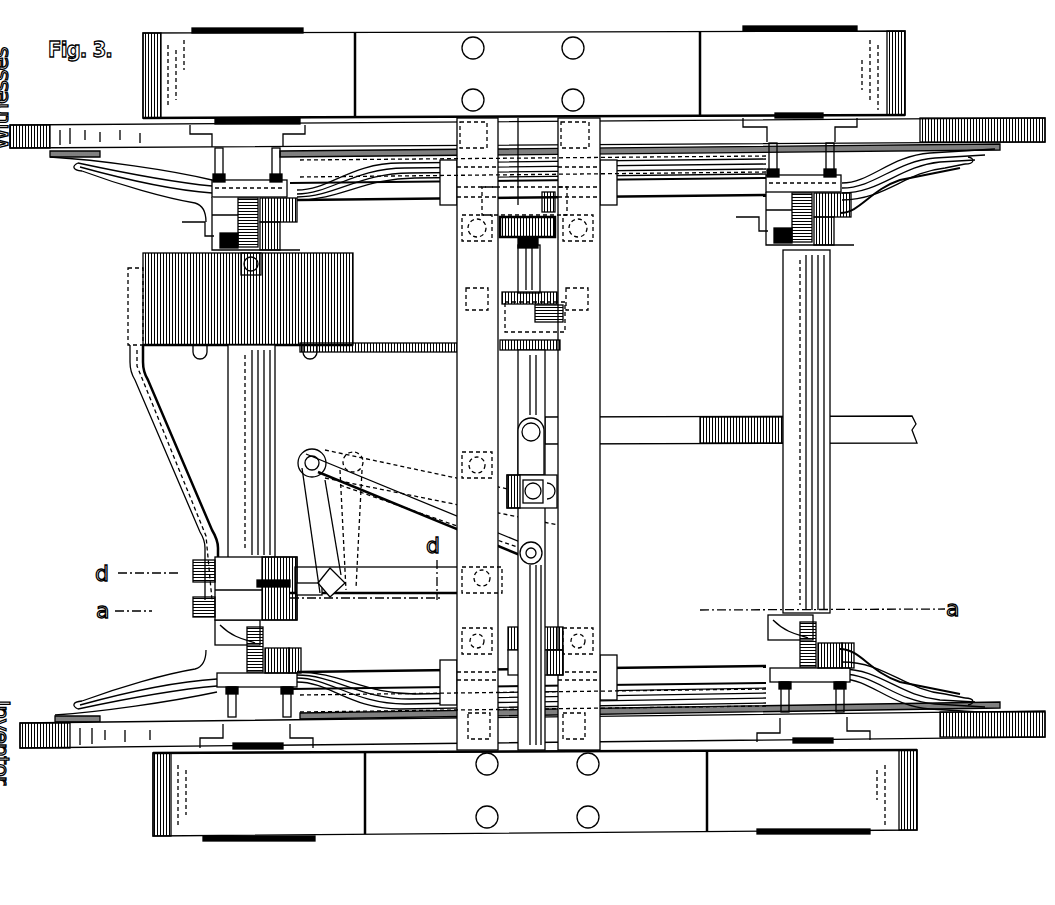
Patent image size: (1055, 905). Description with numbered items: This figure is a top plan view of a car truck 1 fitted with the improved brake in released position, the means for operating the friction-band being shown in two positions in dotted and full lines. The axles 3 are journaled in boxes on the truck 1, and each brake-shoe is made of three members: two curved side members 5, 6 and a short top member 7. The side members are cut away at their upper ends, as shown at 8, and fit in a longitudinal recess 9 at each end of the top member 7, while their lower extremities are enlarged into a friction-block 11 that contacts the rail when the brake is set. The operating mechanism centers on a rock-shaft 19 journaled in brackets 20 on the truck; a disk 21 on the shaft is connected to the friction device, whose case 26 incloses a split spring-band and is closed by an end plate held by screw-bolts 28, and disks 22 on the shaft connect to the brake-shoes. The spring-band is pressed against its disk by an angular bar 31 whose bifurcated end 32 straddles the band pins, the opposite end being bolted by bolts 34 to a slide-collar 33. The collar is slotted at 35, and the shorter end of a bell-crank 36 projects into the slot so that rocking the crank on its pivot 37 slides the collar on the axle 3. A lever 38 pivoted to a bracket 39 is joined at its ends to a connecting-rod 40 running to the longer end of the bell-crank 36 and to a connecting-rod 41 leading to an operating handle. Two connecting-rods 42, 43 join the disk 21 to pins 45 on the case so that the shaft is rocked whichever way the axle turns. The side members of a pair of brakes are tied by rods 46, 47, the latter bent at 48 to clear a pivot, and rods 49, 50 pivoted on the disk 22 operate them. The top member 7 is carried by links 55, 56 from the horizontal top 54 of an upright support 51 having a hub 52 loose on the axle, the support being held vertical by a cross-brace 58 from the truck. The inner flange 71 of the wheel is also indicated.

The truck 1 is at (872, 63).
The axle 3 is at (256, 413).
The curved side member 5 is at (130, 172).
The curved side member 6 is at (372, 176).
The top member 7 is at (247, 132).
The reduced end 8 is at (205, 133).
The longitudinal recess 9 is at (287, 132).
The friction-block 11 is at (1030, 120).
The rock-shaft 19 is at (536, 382).
The bracket 20 is at (542, 228).
The disk 21 is at (560, 312).
The disk 22 is at (517, 195).
The case 26 is at (352, 300).
The screw-bolt 28 is at (250, 258).
The angular bar 31 is at (202, 478).
The bifurcated end 32 is at (130, 300).
The slide-collar 33 is at (305, 596).
The bolt 34 is at (193, 568).
The slot 35 is at (300, 622).
The bell-crank 36 is at (330, 560).
The pivot 37 is at (355, 594).
The lever 38 is at (548, 452).
The bracket 39 is at (560, 486).
The connecting-rod 40 is at (398, 490).
The connecting-rod 41 is at (752, 446).
The connecting-rod 42 is at (400, 345).
The connecting-rod 43 is at (558, 346).
The pin 45 is at (320, 355).
The rod 46 is at (420, 168).
The rod 47 is at (552, 216).
The bend 48 is at (668, 180).
The rod 49 is at (357, 190).
The rod 50 is at (722, 196).
The upright support 51 is at (240, 210).
The hub 52 is at (262, 230).
The horizontal top 54 is at (276, 178).
The link 55 is at (216, 178).
The link 56 is at (292, 178).
The cross-brace 58 is at (442, 206).
The inner flange 71 is at (80, 170).